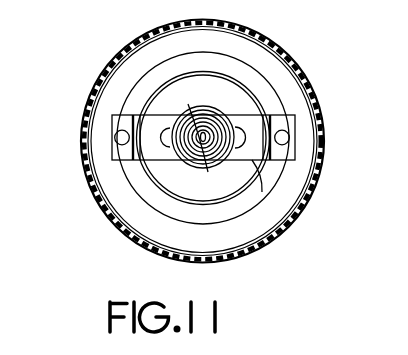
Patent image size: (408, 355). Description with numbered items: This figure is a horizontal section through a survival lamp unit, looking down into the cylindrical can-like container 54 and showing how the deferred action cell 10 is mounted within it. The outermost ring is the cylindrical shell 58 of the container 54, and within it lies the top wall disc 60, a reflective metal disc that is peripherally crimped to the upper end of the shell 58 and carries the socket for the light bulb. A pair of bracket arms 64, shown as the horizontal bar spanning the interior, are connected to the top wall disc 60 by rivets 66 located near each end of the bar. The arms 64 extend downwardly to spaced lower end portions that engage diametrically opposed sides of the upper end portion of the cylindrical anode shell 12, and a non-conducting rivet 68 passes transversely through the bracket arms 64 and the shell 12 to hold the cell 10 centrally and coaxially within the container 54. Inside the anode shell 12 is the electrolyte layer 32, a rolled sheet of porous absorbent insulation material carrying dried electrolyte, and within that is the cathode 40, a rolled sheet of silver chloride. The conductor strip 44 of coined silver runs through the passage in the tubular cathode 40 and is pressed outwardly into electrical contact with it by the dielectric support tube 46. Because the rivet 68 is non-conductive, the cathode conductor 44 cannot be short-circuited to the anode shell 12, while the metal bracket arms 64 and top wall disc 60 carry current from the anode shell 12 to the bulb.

The deferred action cell 10 is at (203, 171).
The cylindrical anode shell 12 is at (192, 167).
The electrolyte layer 32 is at (205, 112).
The cathode 40 is at (196, 113).
The conductor strip 44 is at (252, 169).
The dielectric support tube 46 is at (223, 119).
The cylindrical container 54 is at (283, 48).
The cylindrical shell 58 is at (302, 77).
The top wall disc 60 is at (296, 99).
The bracket arms 64 is at (112, 156).
The rivets 66 is at (113, 135).
The non-conducting rivet 68 is at (260, 192).